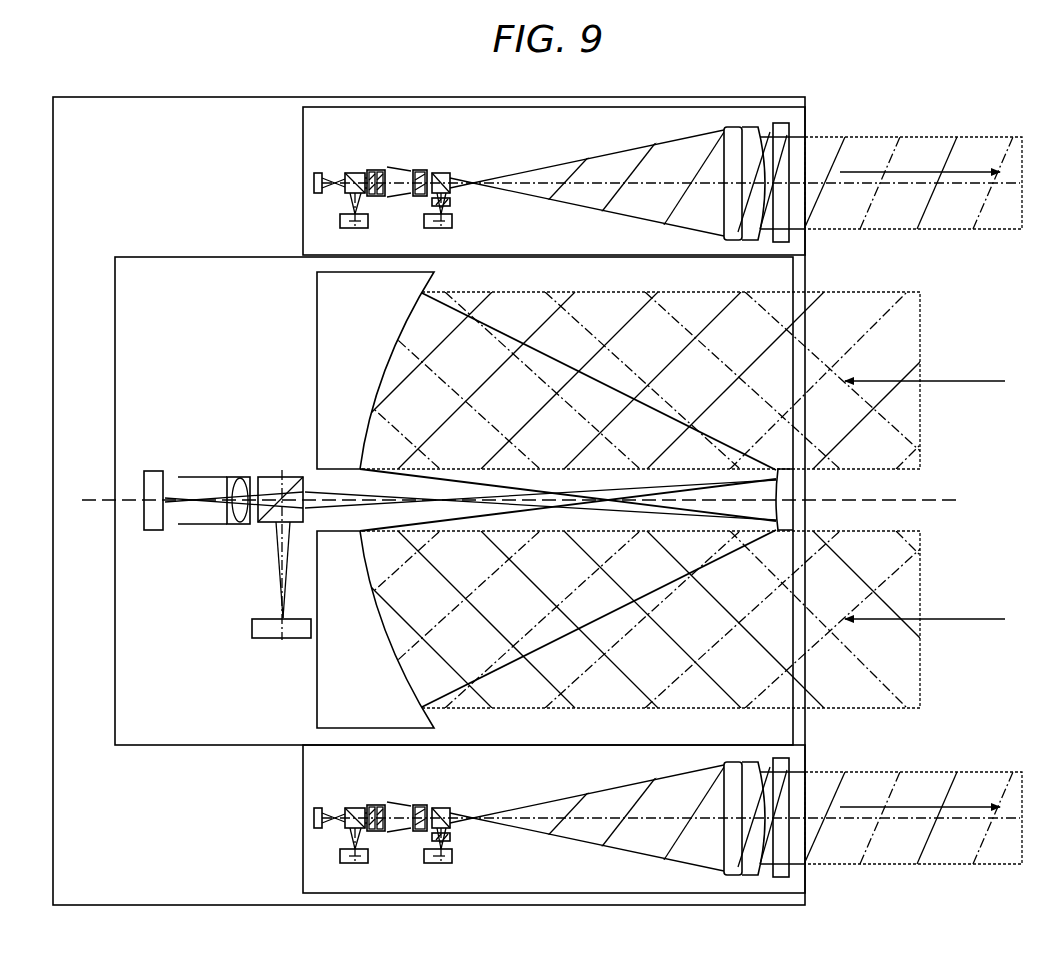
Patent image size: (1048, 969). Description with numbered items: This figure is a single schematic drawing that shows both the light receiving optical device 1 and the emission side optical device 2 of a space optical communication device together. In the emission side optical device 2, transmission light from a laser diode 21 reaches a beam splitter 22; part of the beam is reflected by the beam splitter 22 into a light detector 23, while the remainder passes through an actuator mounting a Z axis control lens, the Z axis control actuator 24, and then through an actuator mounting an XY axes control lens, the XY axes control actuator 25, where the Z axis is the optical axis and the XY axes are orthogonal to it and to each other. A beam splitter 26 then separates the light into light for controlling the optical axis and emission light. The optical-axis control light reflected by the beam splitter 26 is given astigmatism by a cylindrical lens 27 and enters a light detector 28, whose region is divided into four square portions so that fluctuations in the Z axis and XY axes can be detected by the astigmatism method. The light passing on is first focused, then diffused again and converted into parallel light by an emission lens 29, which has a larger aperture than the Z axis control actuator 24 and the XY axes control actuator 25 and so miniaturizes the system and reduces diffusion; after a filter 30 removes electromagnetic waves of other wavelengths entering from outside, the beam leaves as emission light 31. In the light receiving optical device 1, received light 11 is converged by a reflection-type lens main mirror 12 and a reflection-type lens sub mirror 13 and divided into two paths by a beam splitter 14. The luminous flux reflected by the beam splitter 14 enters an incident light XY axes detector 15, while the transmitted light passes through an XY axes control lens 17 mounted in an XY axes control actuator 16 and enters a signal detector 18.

The light receiving optical device 1 is at (173, 257).
The emission side optical device 2 is at (303, 202).
The received light 11 is at (962, 380).
The reflection-type lens main mirror 12 is at (317, 340).
The reflection-type lens sub mirror 13 is at (794, 512).
The beam splitter 14 is at (278, 476).
The incident light XY axes detector 15 is at (252, 630).
The XY axes control actuator 16 is at (240, 476).
The XY axes control lens 17 is at (239, 524).
The signal detector 18 is at (153, 470).
The laser diode 21 is at (318, 172).
The beam splitter 22 is at (350, 172).
The light detector 23 is at (368, 222).
The Z axis control actuator 24 is at (376, 169).
The XY axes control actuator 25 is at (419, 169).
The beam splitter 26 is at (441, 172).
The cylindrical lens 27 is at (450, 203).
The light detector 28 is at (452, 222).
The emission lens 29 is at (738, 130).
The filter 30 is at (788, 130).
The emission light 31 is at (959, 170).